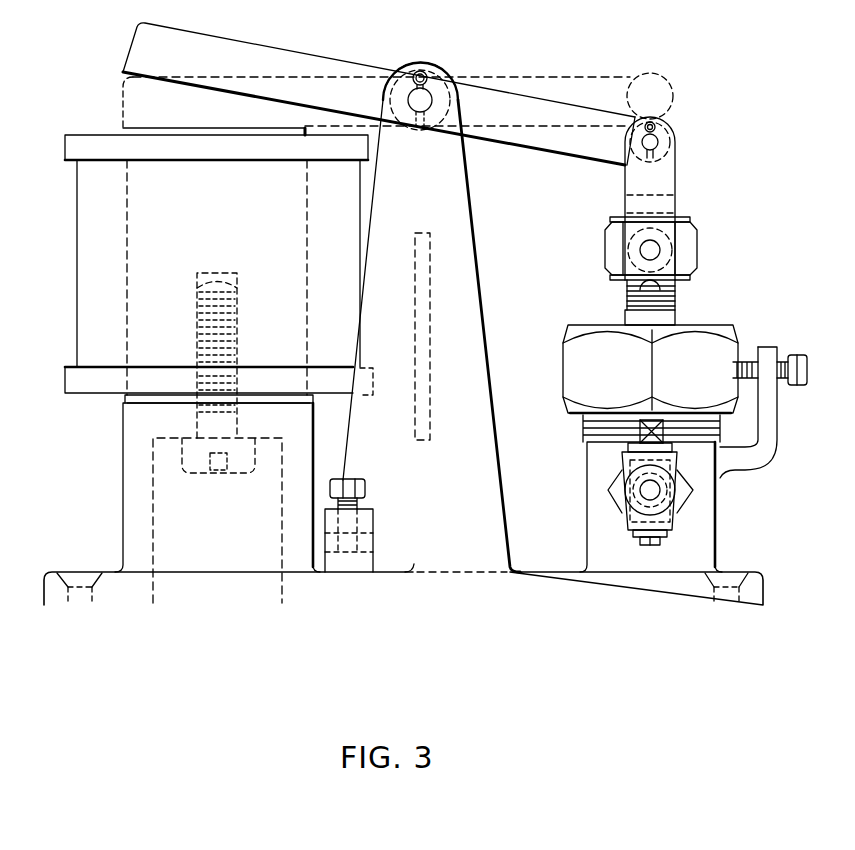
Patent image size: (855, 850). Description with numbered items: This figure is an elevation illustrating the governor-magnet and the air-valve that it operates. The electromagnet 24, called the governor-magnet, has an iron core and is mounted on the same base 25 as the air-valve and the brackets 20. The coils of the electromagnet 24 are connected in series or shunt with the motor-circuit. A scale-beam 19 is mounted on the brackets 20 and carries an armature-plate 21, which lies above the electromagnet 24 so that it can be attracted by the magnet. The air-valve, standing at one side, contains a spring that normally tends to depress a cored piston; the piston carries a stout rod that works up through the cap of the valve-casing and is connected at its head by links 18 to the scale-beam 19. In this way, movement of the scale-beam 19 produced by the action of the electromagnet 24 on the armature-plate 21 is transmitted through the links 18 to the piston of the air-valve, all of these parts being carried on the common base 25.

The links 18 is at (667, 180).
The scale-beam 19 is at (581, 147).
The brackets 20 is at (463, 218).
The armature-plate 21 is at (379, 103).
The electromagnet 24 is at (219, 369).
The base 25 is at (225, 598).